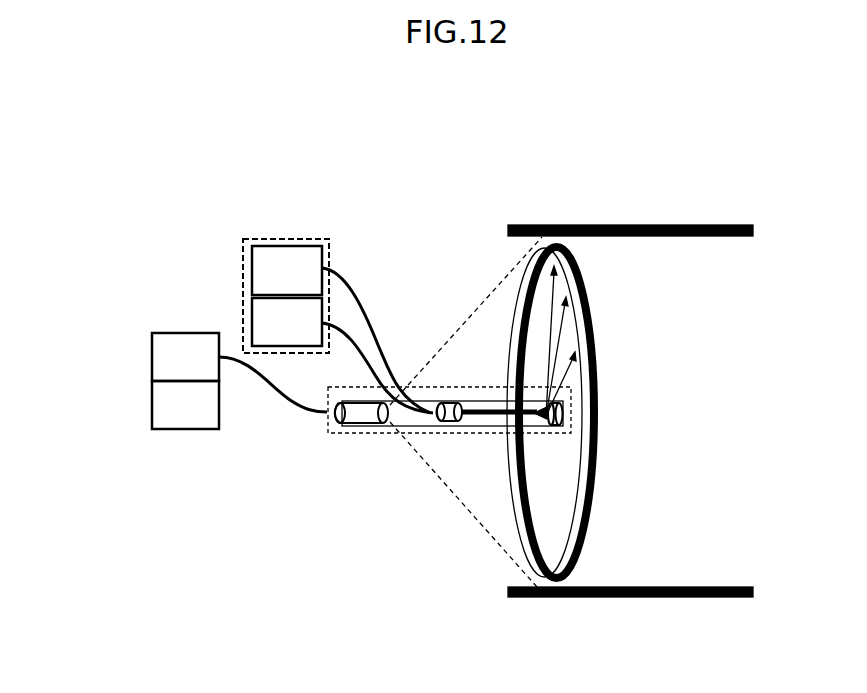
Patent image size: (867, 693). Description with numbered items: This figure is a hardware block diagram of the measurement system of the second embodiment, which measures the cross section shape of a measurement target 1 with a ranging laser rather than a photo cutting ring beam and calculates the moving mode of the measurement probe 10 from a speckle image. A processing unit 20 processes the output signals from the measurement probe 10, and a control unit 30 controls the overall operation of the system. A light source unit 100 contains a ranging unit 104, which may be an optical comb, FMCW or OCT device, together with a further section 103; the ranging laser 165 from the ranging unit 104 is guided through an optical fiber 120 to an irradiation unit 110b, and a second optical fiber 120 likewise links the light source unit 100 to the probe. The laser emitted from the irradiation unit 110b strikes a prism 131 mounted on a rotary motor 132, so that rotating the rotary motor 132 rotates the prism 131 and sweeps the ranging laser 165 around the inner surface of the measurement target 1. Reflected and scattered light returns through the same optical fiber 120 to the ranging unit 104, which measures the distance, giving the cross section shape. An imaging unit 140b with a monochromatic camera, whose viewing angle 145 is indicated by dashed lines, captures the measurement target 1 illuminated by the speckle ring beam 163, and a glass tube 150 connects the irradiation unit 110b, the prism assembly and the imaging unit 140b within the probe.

The measurement target 1 is at (738, 236).
The measurement probe 10 is at (320, 404).
The processing unit 20 is at (152, 360).
The control unit 30 is at (152, 407).
The light source unit 100 is at (289, 238).
The signal processing section 103 is at (252, 313).
The ranging unit 104 is at (252, 268).
The irradiation unit 110b is at (441, 434).
The optical fiber 120 is at (356, 289).
The prism 131 is at (548, 428).
The rotary motor 132 is at (564, 409).
The imaging unit 140b is at (338, 426).
The viewing angle 145 is at (480, 528).
The glass tube 150 is at (396, 428).
The speckle ring beam 163 is at (592, 508).
The ranging laser 165 is at (560, 283).